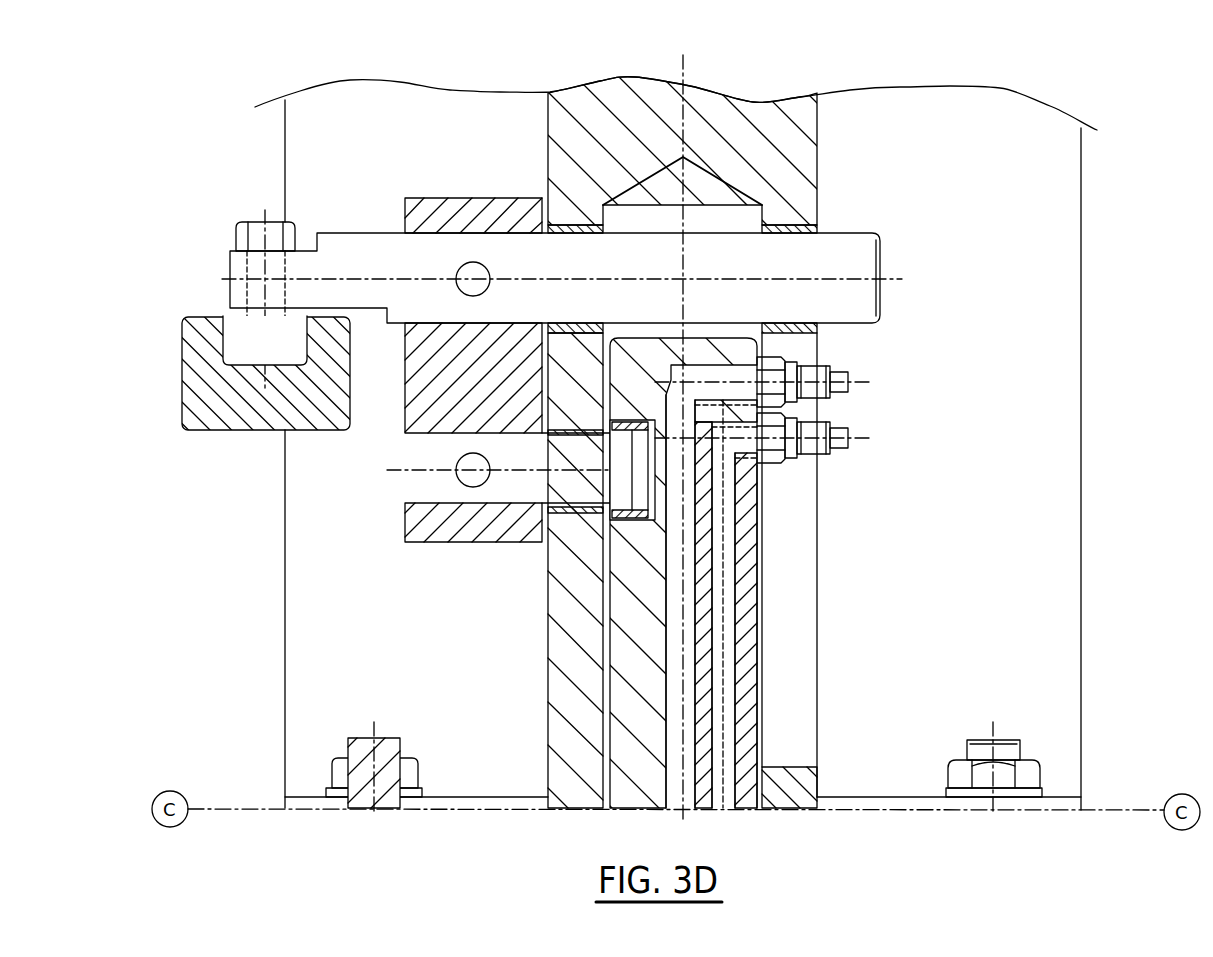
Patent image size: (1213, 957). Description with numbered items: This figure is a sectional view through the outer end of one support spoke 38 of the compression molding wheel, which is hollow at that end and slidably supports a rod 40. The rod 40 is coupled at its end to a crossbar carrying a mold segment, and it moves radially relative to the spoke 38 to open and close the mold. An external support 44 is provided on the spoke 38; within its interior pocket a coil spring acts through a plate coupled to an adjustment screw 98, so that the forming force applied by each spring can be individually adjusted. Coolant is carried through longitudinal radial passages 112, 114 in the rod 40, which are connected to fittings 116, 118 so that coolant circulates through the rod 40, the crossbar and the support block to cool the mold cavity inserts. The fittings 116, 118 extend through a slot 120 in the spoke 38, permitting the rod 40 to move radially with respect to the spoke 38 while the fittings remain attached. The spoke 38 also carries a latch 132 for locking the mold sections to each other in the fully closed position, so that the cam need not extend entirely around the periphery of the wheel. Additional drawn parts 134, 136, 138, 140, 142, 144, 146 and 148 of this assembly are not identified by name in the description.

The support spoke 38 is at (725, 107).
The rod 40 is at (748, 710).
The external support 44 is at (870, 803).
The adjustment screw 98 is at (388, 753).
The longitudinal radial passage 112 is at (730, 647).
The longitudinal radial passage 114 is at (687, 607).
The fitting 116 is at (843, 447).
The fitting 118 is at (843, 393).
The slot 120 is at (800, 535).
The latch 132 is at (858, 210).
The clamp plate 134 is at (860, 258).
The shim 136 is at (818, 332).
The bolt head 138 is at (240, 337).
The clamp block 140 is at (243, 420).
The bracket block 142 is at (403, 527).
The pin 144 is at (502, 488).
The spacer column 146 is at (580, 492).
The slot 148 is at (622, 449).